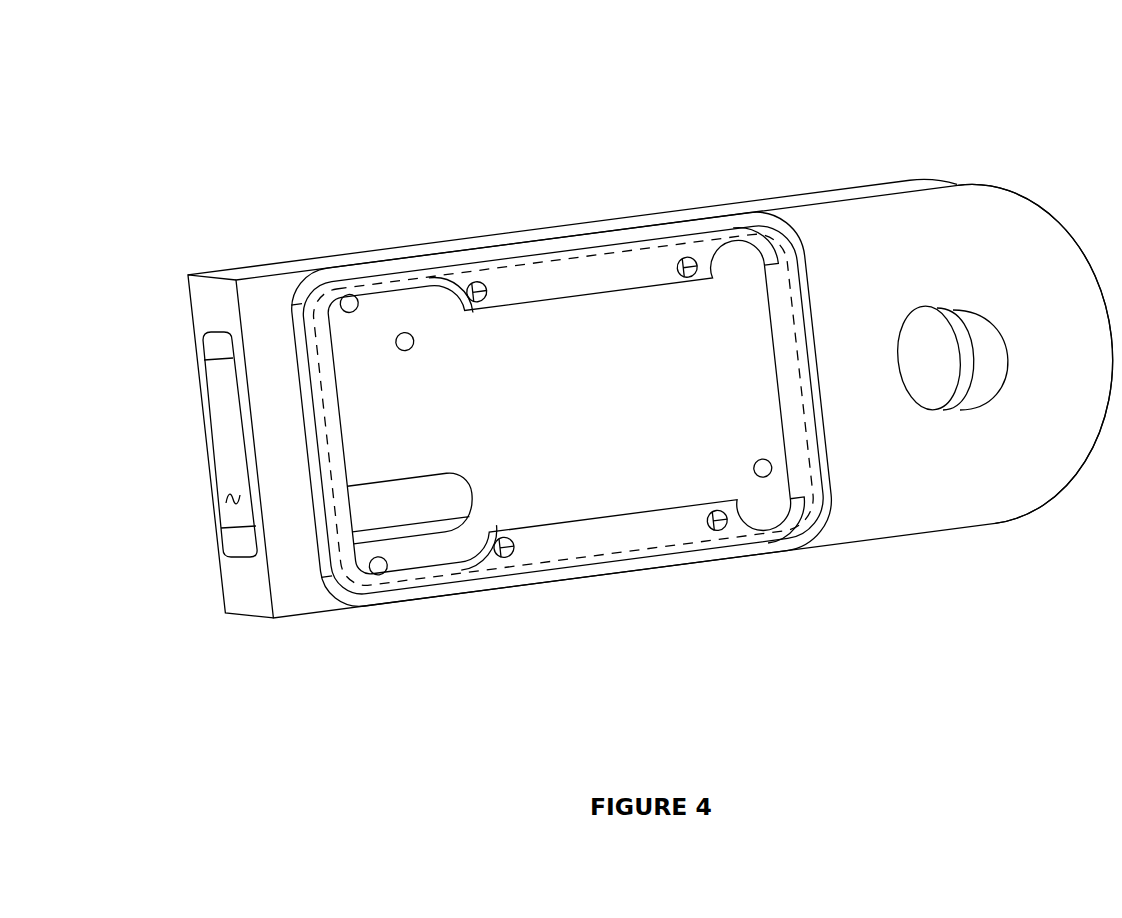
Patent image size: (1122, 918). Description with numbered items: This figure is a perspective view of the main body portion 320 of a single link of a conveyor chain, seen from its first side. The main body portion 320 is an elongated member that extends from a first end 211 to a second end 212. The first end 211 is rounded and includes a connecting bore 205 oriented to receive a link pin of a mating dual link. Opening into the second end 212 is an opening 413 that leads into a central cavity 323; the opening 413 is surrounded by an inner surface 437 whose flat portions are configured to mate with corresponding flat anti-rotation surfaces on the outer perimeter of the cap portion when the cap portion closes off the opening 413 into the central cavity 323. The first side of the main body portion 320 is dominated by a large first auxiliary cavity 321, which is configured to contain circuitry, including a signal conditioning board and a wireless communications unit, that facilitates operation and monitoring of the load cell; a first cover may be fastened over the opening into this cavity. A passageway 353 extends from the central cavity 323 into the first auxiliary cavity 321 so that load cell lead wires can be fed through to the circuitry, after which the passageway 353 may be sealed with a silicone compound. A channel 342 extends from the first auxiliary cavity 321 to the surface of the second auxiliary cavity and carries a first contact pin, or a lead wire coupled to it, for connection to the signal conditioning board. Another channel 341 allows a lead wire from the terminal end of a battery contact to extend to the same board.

The main body portion 320 is at (548, 151).
The first end 211 is at (1009, 180).
The second end 212 is at (203, 245).
The central cavity 323 is at (227, 415).
The opening 413 is at (197, 460).
The inner surface 437 is at (227, 519).
The first auxiliary cavity 321 is at (676, 443).
The passageway 353 is at (375, 526).
The channel 342 is at (356, 289).
The channel 341 is at (398, 570).
The connecting bore 205 is at (940, 387).